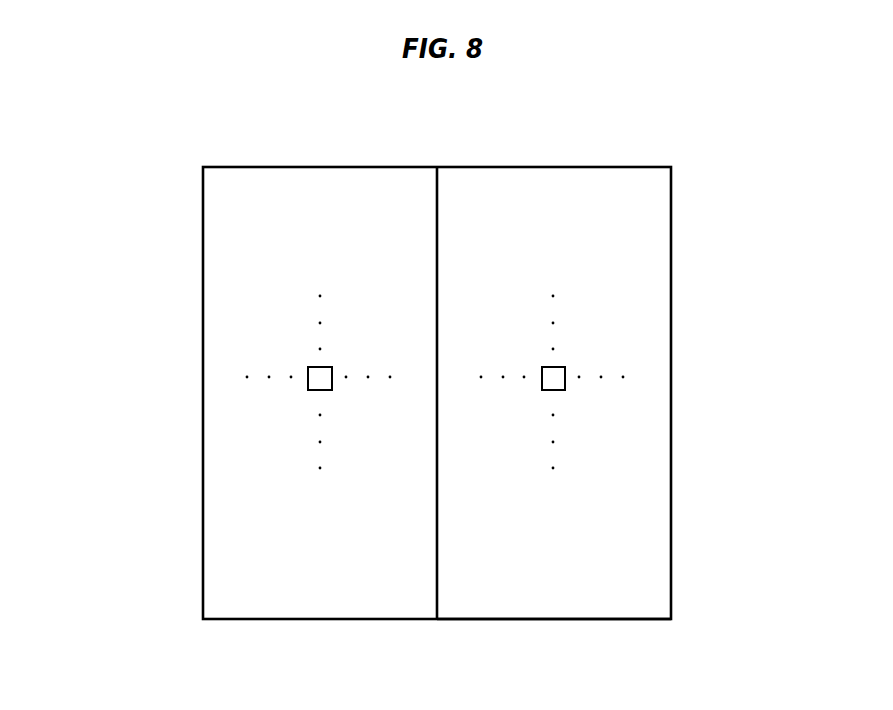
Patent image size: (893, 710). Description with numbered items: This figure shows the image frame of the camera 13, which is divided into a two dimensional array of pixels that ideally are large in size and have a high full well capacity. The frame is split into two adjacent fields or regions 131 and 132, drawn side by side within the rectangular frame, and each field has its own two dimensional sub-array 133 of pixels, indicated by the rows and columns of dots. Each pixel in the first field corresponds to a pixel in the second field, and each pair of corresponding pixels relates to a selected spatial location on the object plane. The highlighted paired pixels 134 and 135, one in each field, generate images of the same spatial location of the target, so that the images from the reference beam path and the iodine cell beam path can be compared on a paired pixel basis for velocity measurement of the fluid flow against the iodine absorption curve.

The camera 13 is at (313, 165).
The first field 131 is at (307, 620).
The second field 132 is at (540, 620).
The sub-array 133 is at (265, 370).
The pixel 134 is at (326, 366).
The pixel 135 is at (560, 366).